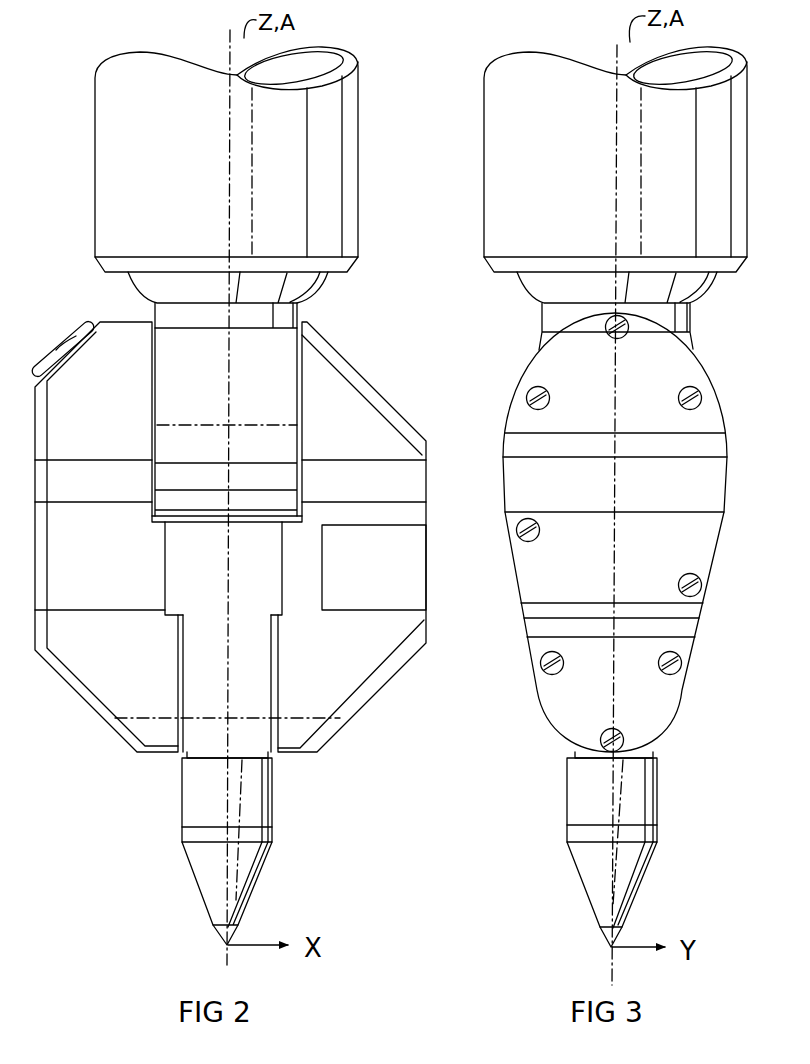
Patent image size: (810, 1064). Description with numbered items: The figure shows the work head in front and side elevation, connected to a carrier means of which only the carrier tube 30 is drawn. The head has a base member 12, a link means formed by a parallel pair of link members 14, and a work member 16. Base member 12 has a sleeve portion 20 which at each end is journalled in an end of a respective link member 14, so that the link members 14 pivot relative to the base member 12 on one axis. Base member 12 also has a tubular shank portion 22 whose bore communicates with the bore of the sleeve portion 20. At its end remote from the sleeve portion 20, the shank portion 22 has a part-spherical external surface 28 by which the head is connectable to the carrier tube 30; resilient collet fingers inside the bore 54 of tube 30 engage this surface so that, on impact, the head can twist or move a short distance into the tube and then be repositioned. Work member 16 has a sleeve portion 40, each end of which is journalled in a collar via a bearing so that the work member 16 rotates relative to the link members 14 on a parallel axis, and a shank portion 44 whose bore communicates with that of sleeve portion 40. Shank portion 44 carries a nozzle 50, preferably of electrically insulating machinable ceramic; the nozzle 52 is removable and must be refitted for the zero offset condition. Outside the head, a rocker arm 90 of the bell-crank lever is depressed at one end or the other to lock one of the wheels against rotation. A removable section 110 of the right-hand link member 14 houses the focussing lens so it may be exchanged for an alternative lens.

In FIG. 2, the base member 12 is at (202, 530).
In FIG. 2, the link member 14 is at (102, 566).
In FIG. 3, the link member 14 is at (680, 499).
In FIG. 2, the work member 16 is at (174, 797).
In FIG. 3, the work member 16 is at (559, 792).
In FIG. 2, the sleeve portion 20 is at (248, 483).
In FIG. 2, the tubular shank portion 22 is at (176, 313).
In FIG. 3, the tubular shank portion 22 is at (553, 320).
In FIG. 2, the part-spherical external surface 28 is at (297, 283).
In FIG. 3, the part-spherical external surface 28 is at (538, 284).
In FIG. 2, the carrier tube 30 is at (332, 178).
In FIG. 3, the carrier tube 30 is at (520, 132).
In FIG. 2, the sleeve portion 40 is at (242, 640).
In FIG. 2, the shank portion 44 is at (200, 808).
In FIG. 3, the shank portion 44 is at (583, 808).
In FIG. 2, the nozzle 50 is at (210, 877).
In FIG. 3, the nozzle 50 is at (598, 875).
In FIG. 2, the nozzle 52 is at (226, 945).
In FIG. 3, the nozzle 52 is at (610, 948).
In FIG. 2, the bore 54 is at (312, 65).
In FIG. 3, the bore 54 is at (698, 66).
In FIG. 2, the rocker arm 90 is at (47, 363).
In FIG. 2, the removable section 110 is at (393, 572).